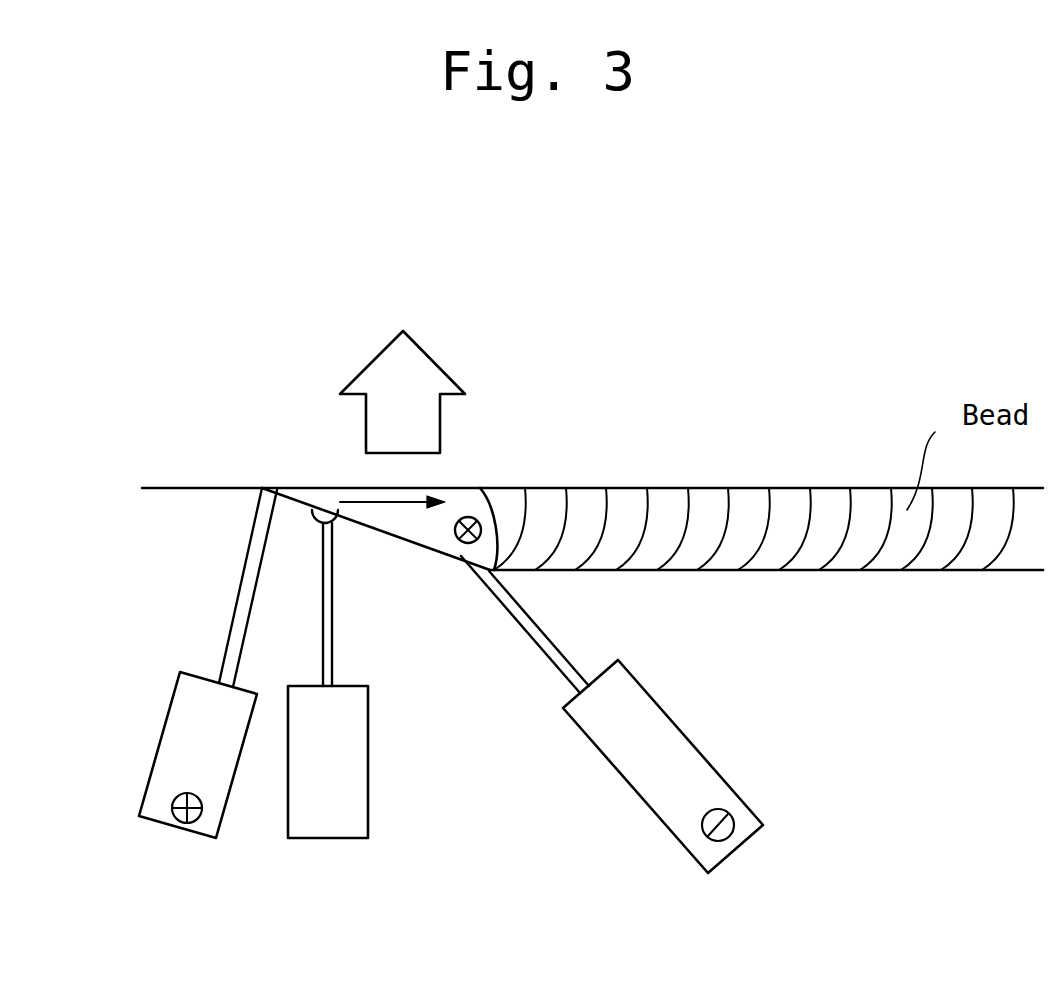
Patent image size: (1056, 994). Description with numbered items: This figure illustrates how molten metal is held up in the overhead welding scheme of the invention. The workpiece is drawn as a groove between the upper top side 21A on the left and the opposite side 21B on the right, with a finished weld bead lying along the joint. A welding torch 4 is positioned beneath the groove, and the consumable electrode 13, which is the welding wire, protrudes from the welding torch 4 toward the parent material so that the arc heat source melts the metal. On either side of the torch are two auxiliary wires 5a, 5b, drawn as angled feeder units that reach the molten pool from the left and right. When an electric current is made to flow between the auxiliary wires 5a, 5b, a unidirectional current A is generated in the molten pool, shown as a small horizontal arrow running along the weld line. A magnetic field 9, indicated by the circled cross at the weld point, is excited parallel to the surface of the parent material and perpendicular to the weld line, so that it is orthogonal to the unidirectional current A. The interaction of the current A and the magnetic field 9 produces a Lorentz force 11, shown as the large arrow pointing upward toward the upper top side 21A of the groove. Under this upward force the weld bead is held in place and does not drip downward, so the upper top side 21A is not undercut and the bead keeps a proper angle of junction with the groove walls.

The welding torch 4 is at (355, 800).
The auxiliary wire 5a is at (238, 602).
The auxiliary wire 5b is at (557, 637).
The magnetic field 9 is at (477, 520).
The Lorentz force 11 is at (402, 361).
The consumable electrode 13 is at (330, 655).
The upper top side of the groove 21A is at (80, 442).
The second workpiece plate 21B is at (972, 667).
The unidirectional current A is at (402, 488).